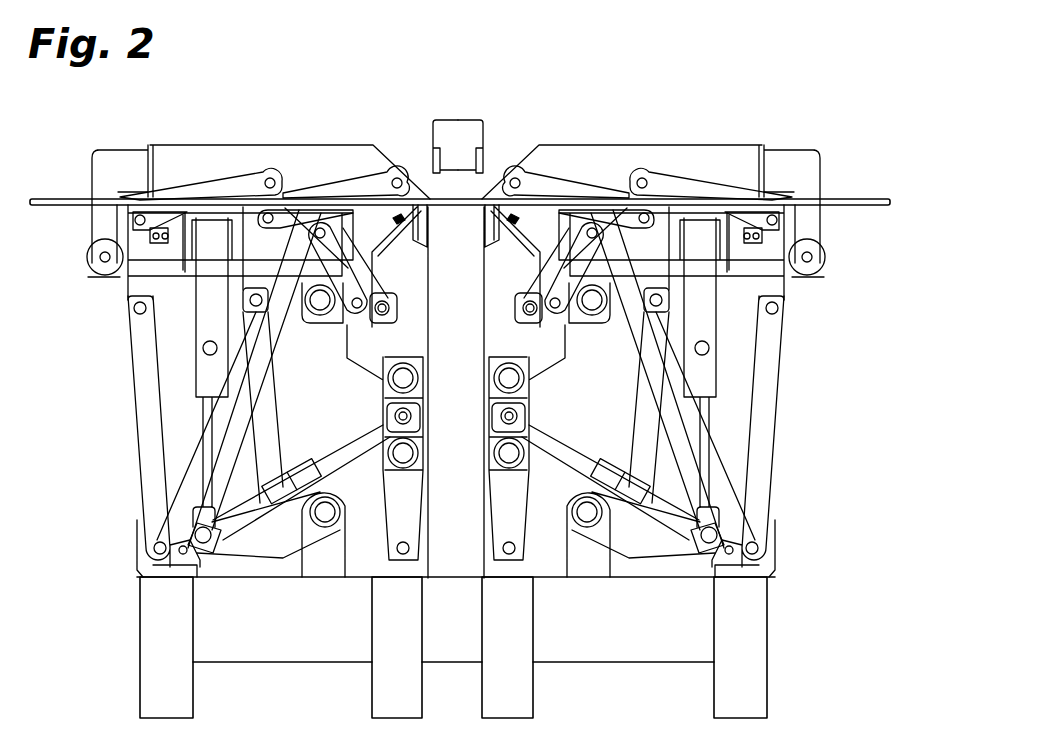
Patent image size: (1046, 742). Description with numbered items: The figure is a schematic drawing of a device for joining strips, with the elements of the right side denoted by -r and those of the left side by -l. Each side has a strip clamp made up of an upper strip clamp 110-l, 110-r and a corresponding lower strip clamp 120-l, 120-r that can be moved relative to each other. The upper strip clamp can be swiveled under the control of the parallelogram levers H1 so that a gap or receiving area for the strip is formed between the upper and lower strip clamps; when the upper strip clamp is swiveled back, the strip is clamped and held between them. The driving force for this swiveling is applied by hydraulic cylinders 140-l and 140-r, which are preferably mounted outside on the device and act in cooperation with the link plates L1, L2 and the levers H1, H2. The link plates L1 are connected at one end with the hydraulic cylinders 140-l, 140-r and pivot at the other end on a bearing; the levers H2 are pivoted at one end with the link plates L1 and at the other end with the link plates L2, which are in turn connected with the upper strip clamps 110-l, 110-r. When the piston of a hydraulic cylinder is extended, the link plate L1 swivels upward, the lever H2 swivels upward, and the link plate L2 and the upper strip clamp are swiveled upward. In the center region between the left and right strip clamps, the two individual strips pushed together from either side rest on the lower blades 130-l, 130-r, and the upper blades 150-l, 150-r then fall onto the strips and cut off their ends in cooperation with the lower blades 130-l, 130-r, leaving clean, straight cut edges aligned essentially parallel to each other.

The upper strip clamp 110-l is at (280, 152).
The upper strip clamp 110-r is at (613, 155).
The lower strip clamp 120-l is at (233, 202).
The lower strip clamp 120-r is at (630, 203).
The lower blade 130-l is at (425, 210).
The lower blade 130-r is at (490, 243).
The hydraulic cylinder 140-l is at (200, 373).
The hydraulic cylinder 140-r is at (703, 370).
The upper blade 150-l is at (433, 160).
The upper blade 150-r is at (483, 160).
The parallelogram lever H1 is at (232, 192).
The lever H2 is at (270, 403).
The link plate L1 is at (273, 540).
The link plate L2 is at (278, 268).